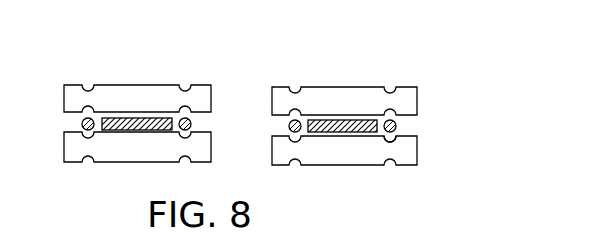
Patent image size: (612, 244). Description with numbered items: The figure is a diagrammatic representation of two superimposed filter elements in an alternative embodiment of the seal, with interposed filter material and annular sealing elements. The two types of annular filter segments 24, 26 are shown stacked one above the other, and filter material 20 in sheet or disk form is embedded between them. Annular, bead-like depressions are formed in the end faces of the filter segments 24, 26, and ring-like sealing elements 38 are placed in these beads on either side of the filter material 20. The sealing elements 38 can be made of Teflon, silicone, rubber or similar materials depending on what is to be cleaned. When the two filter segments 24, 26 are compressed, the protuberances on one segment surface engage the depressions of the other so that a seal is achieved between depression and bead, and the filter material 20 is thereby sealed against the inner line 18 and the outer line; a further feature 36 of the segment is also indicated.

The inner line 18 is at (245, 118).
The filter segment 24 is at (366, 100).
The filter segment 26 is at (367, 155).
The filter material 20 is at (348, 132).
The recess 36 is at (393, 141).
The ring-like sealing element 38 is at (398, 126).